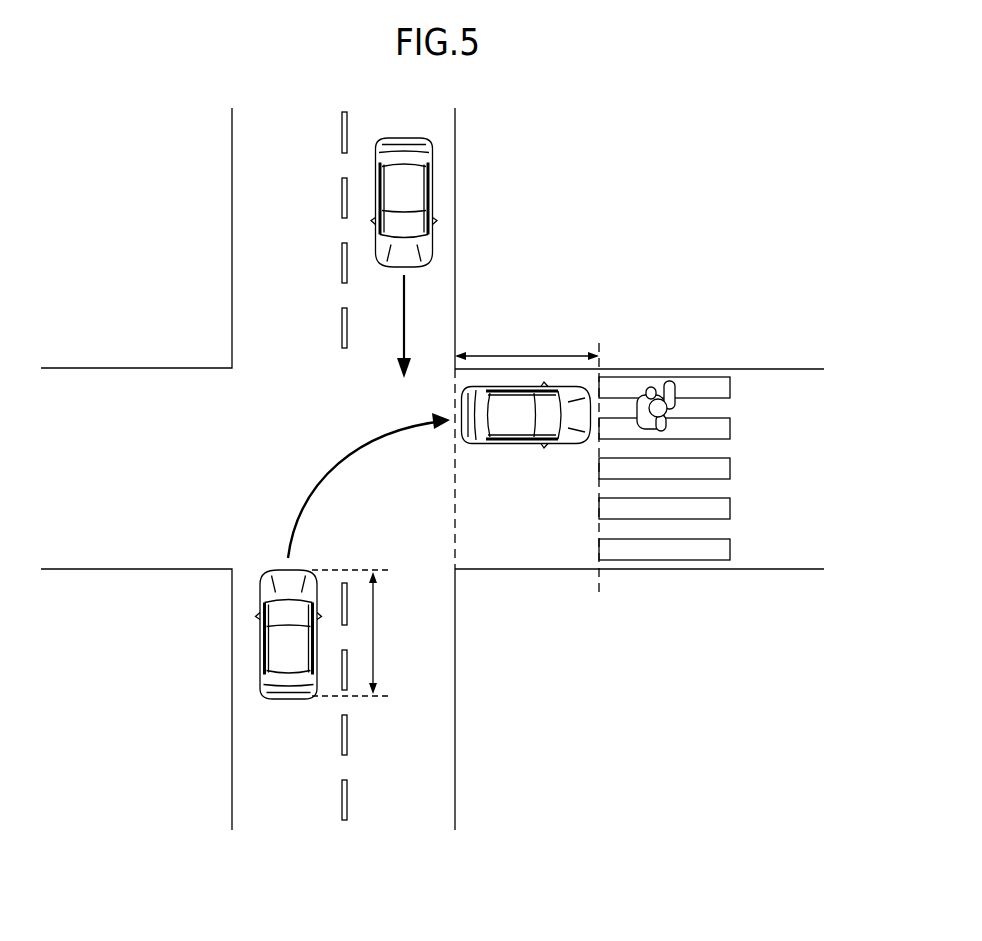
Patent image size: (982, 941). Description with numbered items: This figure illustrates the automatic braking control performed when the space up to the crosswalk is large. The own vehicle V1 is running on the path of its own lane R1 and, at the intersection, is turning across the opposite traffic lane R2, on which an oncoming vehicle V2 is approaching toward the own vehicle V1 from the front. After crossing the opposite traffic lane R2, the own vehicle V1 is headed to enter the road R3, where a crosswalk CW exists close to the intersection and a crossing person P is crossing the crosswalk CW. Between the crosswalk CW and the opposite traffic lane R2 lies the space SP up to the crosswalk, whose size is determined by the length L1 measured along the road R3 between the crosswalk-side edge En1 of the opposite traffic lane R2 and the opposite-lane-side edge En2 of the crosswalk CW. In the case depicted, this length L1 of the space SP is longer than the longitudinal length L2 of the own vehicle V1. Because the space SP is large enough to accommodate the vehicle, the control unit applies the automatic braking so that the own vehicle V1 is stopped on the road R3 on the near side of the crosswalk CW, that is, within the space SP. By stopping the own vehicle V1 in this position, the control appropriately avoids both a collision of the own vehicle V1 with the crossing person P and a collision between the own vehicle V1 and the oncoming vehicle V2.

The own lane path R1 is at (265, 781).
The opposite traffic lane R2 is at (420, 115).
The road entered after the turn R3 is at (796, 400).
The own vehicle V1 is at (262, 643).
The oncoming vehicle V2 is at (431, 206).
The crossing person P is at (675, 404).
The crosswalk CW is at (738, 516).
The space up to the crosswalk SP is at (540, 524).
The crosswalk side edge of the opposite traffic lane En1 is at (455, 548).
The opposite traffic lane side edge of the crosswalk En2 is at (599, 587).
The length of the space up to the crosswalk L1 is at (527, 344).
The longitudinal length of the own vehicle L2 is at (358, 633).